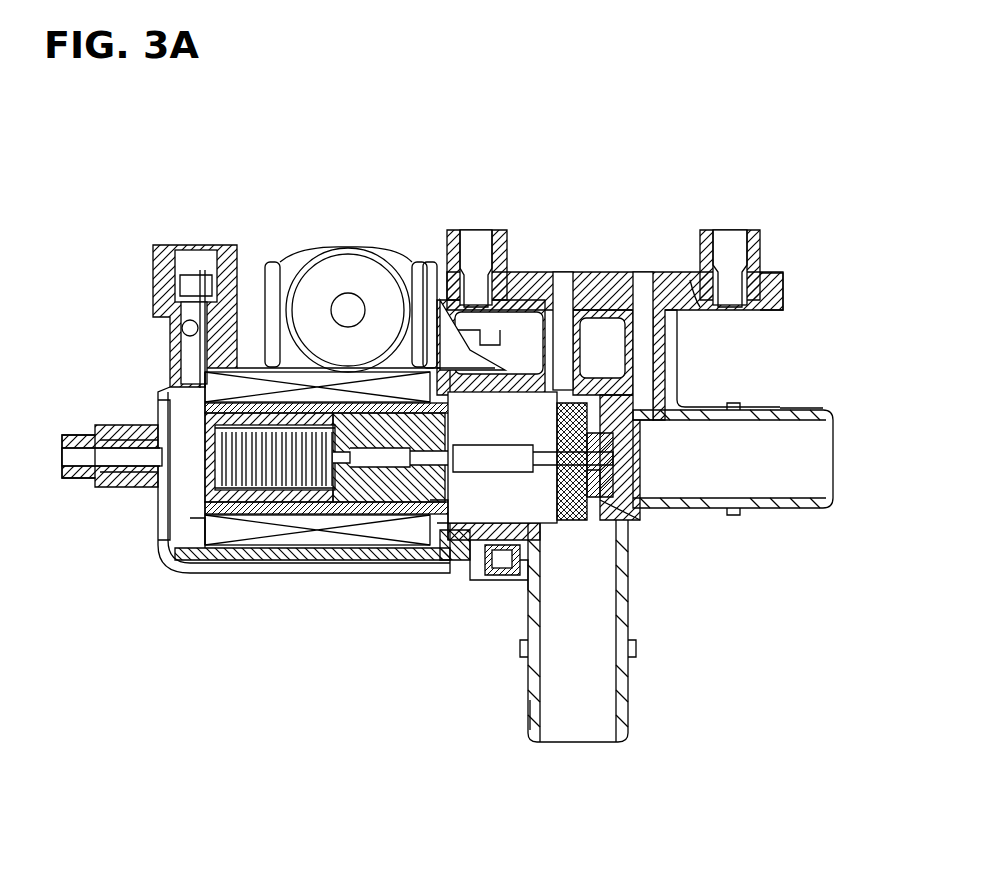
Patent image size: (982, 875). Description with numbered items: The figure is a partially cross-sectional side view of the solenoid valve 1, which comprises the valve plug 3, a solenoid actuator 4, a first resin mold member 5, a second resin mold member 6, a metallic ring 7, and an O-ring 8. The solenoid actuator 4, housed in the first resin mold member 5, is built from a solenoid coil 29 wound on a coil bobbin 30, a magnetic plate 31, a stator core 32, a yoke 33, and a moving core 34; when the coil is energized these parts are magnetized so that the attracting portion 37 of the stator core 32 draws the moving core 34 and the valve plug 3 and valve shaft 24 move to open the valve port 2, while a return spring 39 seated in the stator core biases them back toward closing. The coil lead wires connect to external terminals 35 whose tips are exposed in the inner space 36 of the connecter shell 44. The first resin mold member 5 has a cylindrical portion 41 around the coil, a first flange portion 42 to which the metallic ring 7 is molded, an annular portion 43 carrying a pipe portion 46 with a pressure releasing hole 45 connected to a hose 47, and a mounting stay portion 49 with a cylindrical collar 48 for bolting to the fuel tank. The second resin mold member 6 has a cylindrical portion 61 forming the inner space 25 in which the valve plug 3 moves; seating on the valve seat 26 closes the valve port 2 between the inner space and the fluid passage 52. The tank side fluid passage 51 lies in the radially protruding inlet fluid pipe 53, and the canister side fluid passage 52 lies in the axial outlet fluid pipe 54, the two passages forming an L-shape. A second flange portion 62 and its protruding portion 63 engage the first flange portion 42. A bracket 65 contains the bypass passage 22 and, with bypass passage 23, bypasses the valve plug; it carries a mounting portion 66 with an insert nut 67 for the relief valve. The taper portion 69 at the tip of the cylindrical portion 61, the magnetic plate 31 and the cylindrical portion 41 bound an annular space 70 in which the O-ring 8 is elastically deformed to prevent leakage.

The solenoid valve 1 is at (216, 190).
The valve port 2 is at (598, 513).
The valve plug 3 is at (602, 527).
The solenoid actuator 4 is at (208, 573).
The first resin mold member 5 is at (248, 566).
The second resin mold member 6 is at (663, 388).
The metallic ring 7 is at (520, 595).
The O-ring 8 is at (455, 562).
The bypass passage 22 is at (562, 285).
The bypass passage 23 is at (642, 285).
The valve shaft 24 is at (603, 498).
The inner space 25 is at (520, 432).
The valve seat 26 is at (600, 520).
The solenoid coil 29 is at (230, 533).
The coil bobbin 30 is at (283, 512).
The magnetic plate 31 is at (425, 300).
The stator core 32 is at (257, 390).
The yoke 33 is at (300, 548).
The moving core 34 is at (380, 488).
The external terminals 35 is at (178, 300).
The inner space 36 is at (188, 262).
The attracting portion 37 is at (328, 470).
The return spring 39 is at (205, 556).
The cylindrical portion 41 is at (352, 548).
The first flange portion 42 is at (485, 568).
The annular portion 43 is at (162, 512).
The connecter shell 44 is at (182, 322).
The pressure releasing hole 45 is at (125, 438).
The pipe portion 46 is at (120, 472).
The hose 47 is at (68, 430).
The cylindrical collar 48 is at (352, 284).
The mounting stay portion 49 is at (318, 258).
The fluid passage 51 is at (578, 712).
The fluid passage 52 is at (838, 457).
The fluid pipe 53 is at (527, 708).
The fluid pipe 54 is at (790, 408).
The cylindrical portion 61 is at (487, 533).
The second flange portion 62 is at (510, 578).
The protruding portion 63 is at (497, 585).
The bracket 65 is at (785, 296).
The mounting portion 66 is at (690, 278).
The insert nut 67 is at (500, 245).
The taper portion 69 is at (450, 378).
The annular space 70 is at (445, 555).